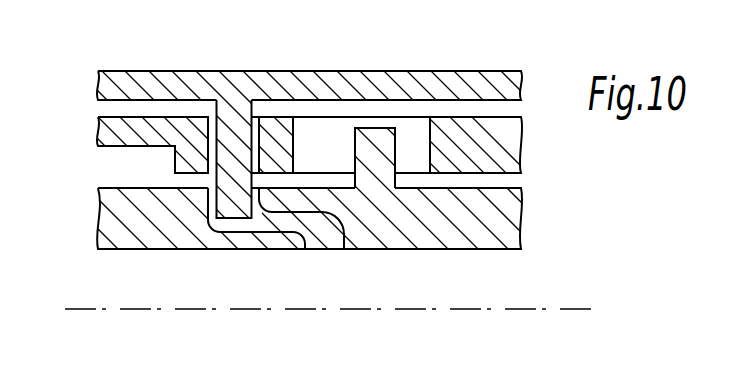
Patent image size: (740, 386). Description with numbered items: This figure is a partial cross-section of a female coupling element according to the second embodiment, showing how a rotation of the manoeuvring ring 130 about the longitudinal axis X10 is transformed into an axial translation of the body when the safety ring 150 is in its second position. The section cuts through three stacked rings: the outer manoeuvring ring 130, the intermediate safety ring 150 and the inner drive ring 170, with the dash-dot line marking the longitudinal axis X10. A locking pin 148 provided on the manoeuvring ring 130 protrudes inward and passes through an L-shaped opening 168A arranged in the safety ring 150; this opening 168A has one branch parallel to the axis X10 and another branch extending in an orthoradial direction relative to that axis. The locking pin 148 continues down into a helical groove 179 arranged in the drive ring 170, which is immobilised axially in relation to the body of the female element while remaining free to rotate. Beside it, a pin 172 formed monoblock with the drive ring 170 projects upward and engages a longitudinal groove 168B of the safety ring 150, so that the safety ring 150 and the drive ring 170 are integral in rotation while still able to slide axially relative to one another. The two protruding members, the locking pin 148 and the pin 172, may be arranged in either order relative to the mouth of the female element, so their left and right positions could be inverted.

The manoeuvring ring 130 is at (473, 87).
The locking pin 148 is at (232, 140).
The safety ring 150 is at (505, 145).
The L-shaped opening 168A is at (210, 112).
The longitudinal groove 168B is at (324, 148).
The drive ring 170 is at (497, 224).
The pin 172 is at (380, 143).
The helical groove 179 is at (322, 262).
The longitudinal axis X10 is at (90, 309).